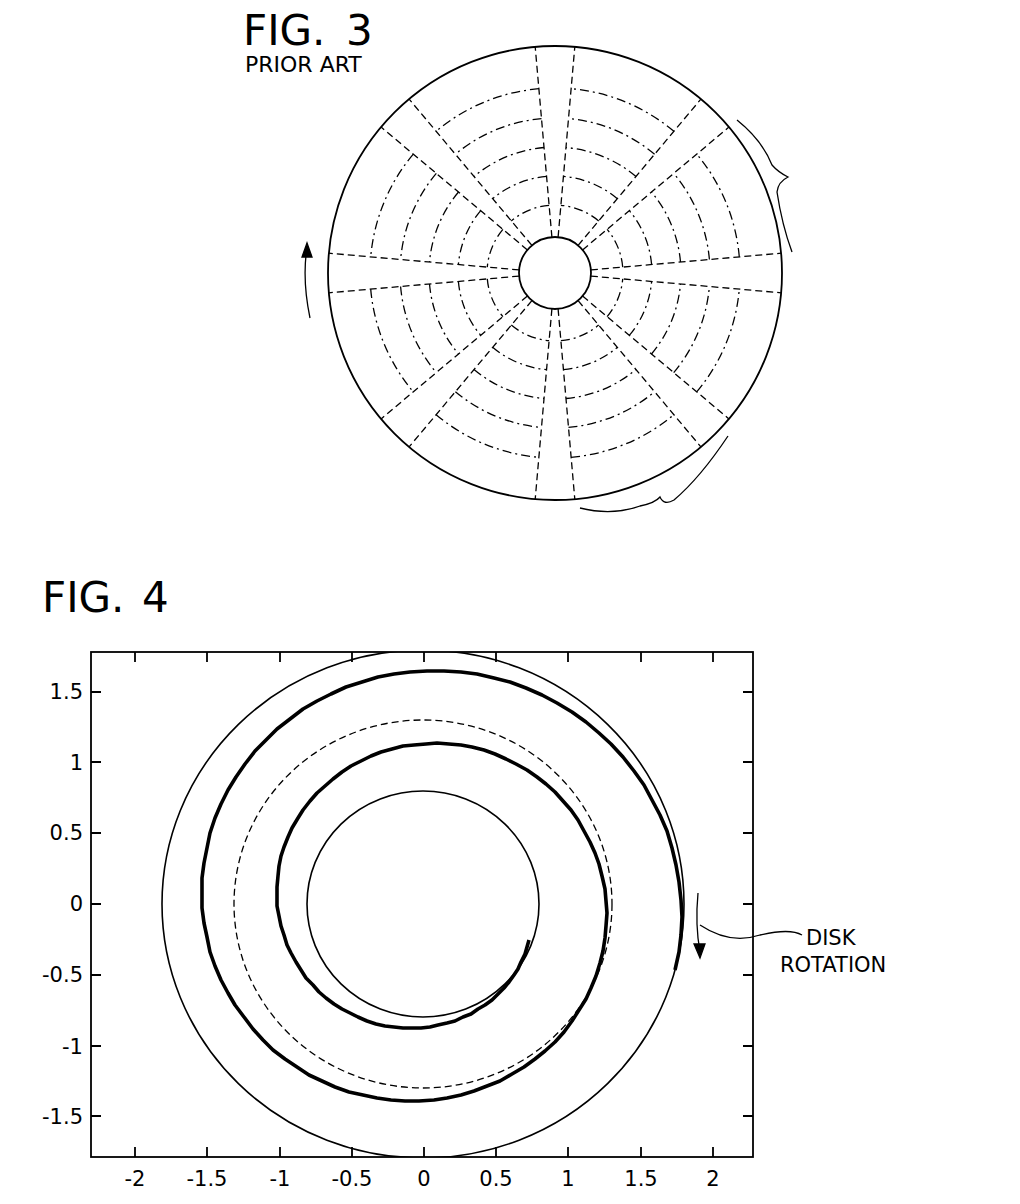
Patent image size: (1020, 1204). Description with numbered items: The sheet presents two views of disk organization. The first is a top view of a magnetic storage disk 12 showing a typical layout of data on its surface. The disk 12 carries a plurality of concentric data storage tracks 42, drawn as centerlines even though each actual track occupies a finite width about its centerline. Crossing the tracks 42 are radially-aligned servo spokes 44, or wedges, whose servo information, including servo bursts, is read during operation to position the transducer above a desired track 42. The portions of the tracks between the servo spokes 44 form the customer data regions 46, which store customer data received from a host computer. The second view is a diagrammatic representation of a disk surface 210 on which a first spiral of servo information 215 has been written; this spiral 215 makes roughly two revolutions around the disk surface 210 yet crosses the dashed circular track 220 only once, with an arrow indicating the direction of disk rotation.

In FIG. 3, the magnetic storage disk 12 is at (342, 141).
In FIG. 3, the data storage tracks 42 is at (674, 330).
In FIG. 3, the servo spokes 44 is at (556, 57).
In FIG. 3, the customer data regions 46 is at (702, 326).
In FIG. 4, the disk surface 210 is at (423, 904).
In FIG. 4, the first spiral of servo information 215 is at (573, 713).
In FIG. 4, the track 220 is at (562, 782).